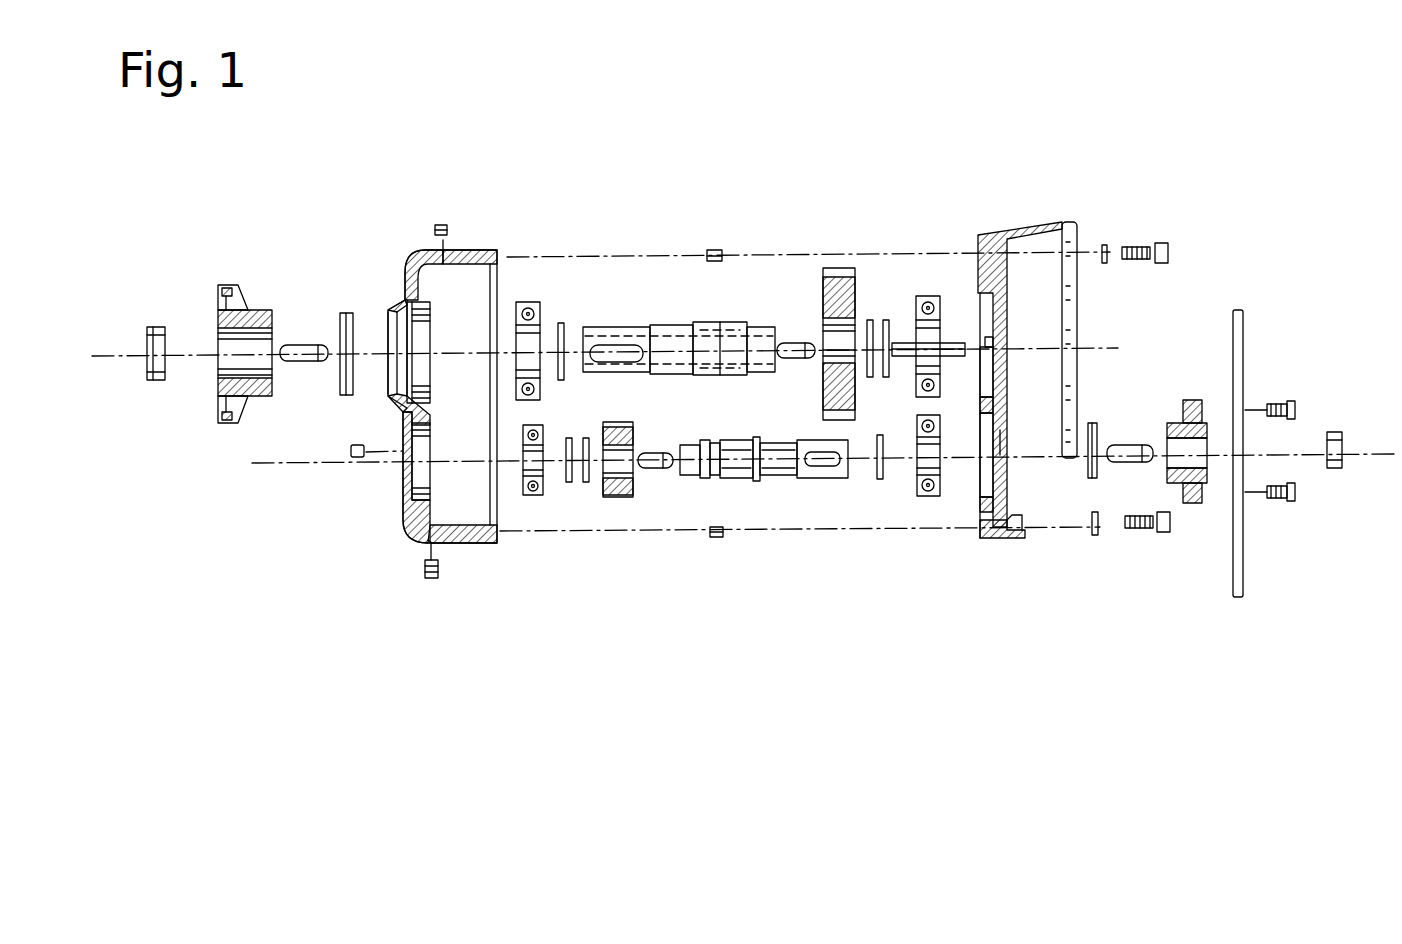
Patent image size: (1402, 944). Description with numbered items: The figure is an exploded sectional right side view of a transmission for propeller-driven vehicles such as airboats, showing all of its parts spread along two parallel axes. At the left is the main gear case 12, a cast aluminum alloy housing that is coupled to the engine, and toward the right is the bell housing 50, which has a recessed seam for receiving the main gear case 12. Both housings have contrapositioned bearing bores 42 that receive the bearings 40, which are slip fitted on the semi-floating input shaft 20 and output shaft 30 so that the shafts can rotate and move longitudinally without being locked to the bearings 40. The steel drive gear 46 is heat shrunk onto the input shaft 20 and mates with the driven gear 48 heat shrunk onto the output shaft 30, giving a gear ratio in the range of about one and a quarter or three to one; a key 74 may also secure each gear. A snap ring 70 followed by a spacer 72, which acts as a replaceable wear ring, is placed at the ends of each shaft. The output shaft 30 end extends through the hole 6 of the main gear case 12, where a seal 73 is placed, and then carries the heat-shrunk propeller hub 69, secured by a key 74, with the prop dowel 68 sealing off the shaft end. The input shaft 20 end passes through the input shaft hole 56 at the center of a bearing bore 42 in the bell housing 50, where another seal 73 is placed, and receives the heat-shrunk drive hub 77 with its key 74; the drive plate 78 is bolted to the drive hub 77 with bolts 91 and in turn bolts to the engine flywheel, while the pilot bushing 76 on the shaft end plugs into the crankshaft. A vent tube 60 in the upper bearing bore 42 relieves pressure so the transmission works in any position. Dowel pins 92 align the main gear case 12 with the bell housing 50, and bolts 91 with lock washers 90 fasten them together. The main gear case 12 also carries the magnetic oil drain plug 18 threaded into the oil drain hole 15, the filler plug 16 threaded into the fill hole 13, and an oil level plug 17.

The hole of the main gear case 6 is at (396, 345).
The main gear case 12 is at (411, 262).
The fill hole 13 is at (447, 250).
The oil drain hole 15 is at (430, 540).
The filler plug 16 is at (440, 225).
The oil level plug 17 is at (350, 457).
The magnetic oil drain plug 18 is at (431, 580).
The input shaft 20 is at (780, 482).
The output shaft 30 is at (672, 325).
The bearings 40 is at (521, 302).
The bearing bores 42 is at (420, 343).
The drive gear 46 is at (620, 498).
The driven gear 48 is at (838, 268).
The bell housing 50 is at (1012, 232).
The input shaft hole 56 is at (1002, 443).
The vent tube 60 is at (955, 343).
The prop dowel 68 is at (155, 327).
The propeller hub 69 is at (230, 287).
The snap ring 70 is at (870, 320).
The spacer 72 is at (561, 323).
The seal 73 is at (343, 318).
The key 74 is at (290, 345).
The pilot bushing 76 is at (1338, 432).
The drive hub 77 is at (1186, 400).
The drive plate 78 is at (1243, 368).
The lock washers 90 is at (1104, 245).
The bolts 91 is at (1145, 247).
The dowel pins 92 is at (715, 250).